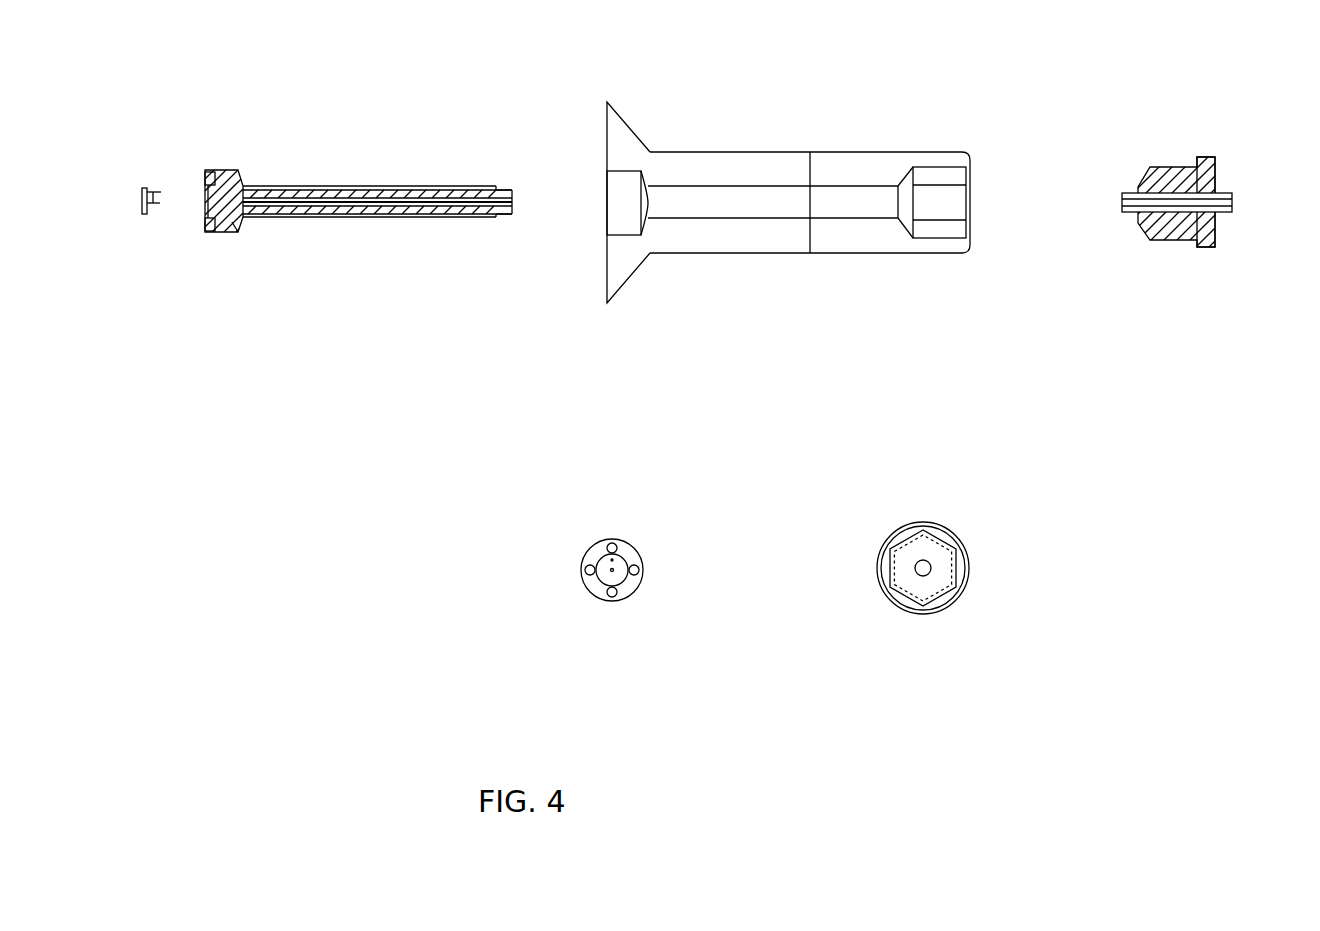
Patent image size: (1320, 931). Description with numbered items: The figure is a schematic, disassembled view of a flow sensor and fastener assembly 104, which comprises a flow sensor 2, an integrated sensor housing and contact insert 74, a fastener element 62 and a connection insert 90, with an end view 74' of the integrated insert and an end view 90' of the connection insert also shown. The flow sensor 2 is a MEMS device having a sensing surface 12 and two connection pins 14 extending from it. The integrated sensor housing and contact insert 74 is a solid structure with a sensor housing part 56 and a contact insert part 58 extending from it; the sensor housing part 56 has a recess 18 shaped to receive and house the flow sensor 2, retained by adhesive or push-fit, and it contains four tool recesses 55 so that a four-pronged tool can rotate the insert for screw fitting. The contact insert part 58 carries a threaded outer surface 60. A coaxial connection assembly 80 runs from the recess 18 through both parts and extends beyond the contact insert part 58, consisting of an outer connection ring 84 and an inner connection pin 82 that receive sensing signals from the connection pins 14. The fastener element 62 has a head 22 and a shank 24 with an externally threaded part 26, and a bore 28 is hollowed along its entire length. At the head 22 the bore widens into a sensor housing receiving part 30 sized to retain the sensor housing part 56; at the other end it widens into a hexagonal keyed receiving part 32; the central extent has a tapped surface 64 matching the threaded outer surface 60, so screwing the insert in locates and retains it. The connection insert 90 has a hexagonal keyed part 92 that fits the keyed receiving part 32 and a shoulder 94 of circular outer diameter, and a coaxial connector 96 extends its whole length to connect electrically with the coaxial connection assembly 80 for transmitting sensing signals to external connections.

The flow sensor 2 is at (140, 145).
The sensing surface 12 is at (142, 203).
The connection pins 14 is at (156, 191).
The recess 18 is at (205, 205).
The head 22 is at (618, 135).
The shank 24 is at (743, 168).
The externally threaded part 26 is at (878, 152).
The bore 28 is at (838, 200).
The sensor housing receiving part 30 is at (628, 210).
The keyed receiving part 32 is at (935, 210).
The tool recesses 55 is at (212, 170).
The sensor housing part 56 is at (231, 224).
The contact insert part 58 is at (385, 212).
The threaded outer surface 60 is at (385, 188).
The fastener element 62 is at (788, 188).
The tapped surface 64 is at (760, 220).
The integrated sensor housing and contact insert 74 is at (569, 335).
The end view of the integrated sensor housing and contact insert 74' is at (609, 622).
The coaxial connection assembly 80 is at (505, 218).
The inner connection pin 82 is at (510, 208).
The outer connection ring 84 is at (506, 188).
The connection insert 90 is at (1053, 331).
The end view of the connection insert 90' is at (903, 663).
The keyed part 92 is at (1177, 242).
The shoulder 94 is at (1210, 162).
The coaxial connector 96 is at (1120, 210).
The flow sensor and fastener assembly 104 is at (1236, 70).